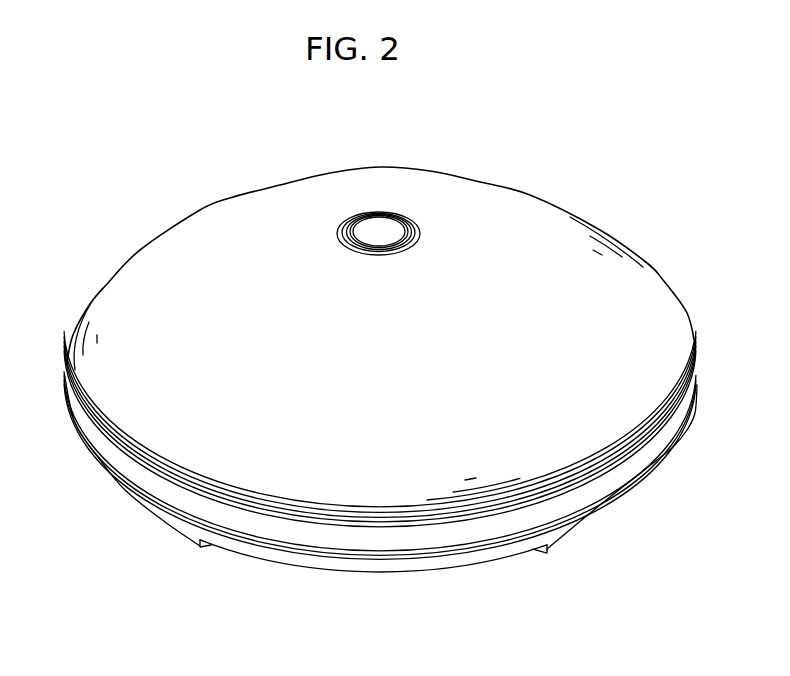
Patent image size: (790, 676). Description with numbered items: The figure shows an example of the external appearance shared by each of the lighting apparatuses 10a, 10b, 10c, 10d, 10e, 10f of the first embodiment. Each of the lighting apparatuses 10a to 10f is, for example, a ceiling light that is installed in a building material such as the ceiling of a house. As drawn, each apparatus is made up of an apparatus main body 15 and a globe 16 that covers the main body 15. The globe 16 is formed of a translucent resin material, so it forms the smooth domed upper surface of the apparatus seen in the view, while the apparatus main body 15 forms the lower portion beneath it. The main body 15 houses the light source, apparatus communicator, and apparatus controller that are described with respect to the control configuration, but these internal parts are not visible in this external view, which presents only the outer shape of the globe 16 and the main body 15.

The lighting apparatus 10a is at (373, 369).
The lighting apparatus 10b is at (373, 369).
The lighting apparatus 10c is at (373, 369).
The lighting apparatus 10d is at (373, 369).
The lighting apparatus 10e is at (373, 369).
The lighting apparatus 10f is at (142, 216).
The apparatus main body 15 is at (378, 563).
The globe 16 is at (498, 203).